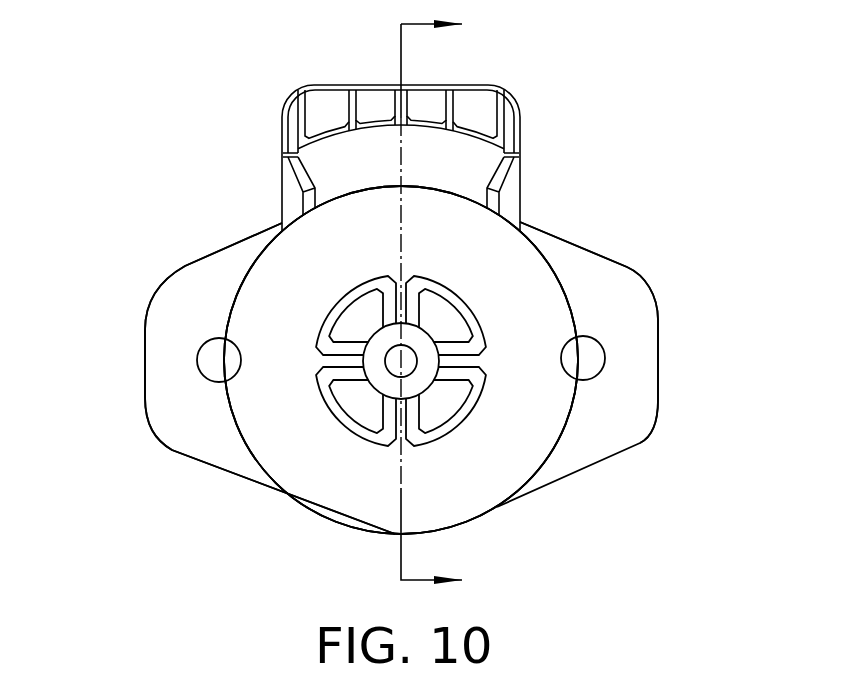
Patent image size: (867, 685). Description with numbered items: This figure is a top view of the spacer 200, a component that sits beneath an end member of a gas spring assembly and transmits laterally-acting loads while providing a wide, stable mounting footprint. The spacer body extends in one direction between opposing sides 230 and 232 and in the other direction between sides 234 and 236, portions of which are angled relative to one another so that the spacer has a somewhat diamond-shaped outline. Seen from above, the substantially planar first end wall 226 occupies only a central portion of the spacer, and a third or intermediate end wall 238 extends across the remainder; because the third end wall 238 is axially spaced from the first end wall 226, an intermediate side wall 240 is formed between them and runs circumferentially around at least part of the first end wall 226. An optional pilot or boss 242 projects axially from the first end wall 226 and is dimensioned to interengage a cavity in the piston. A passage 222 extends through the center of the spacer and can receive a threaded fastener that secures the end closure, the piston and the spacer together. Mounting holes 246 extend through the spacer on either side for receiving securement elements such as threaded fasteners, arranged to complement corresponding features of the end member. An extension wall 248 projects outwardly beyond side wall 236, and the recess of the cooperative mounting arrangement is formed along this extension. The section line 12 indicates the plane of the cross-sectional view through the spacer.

The section line 12- 12 is at (456, 304).
The spacer 200 is at (640, 219).
The passage 222 is at (413, 373).
The first end wall 226 is at (307, 457).
The side 230 is at (148, 340).
The side 232 is at (658, 333).
The side 234 is at (362, 532).
The side wall 236 is at (547, 231).
The third end wall 238 is at (192, 281).
The intermediate side wall 240 is at (258, 460).
The pilot or boss 242 is at (422, 330).
The mounting holes 246 is at (205, 380).
The extension wall 248 is at (470, 158).